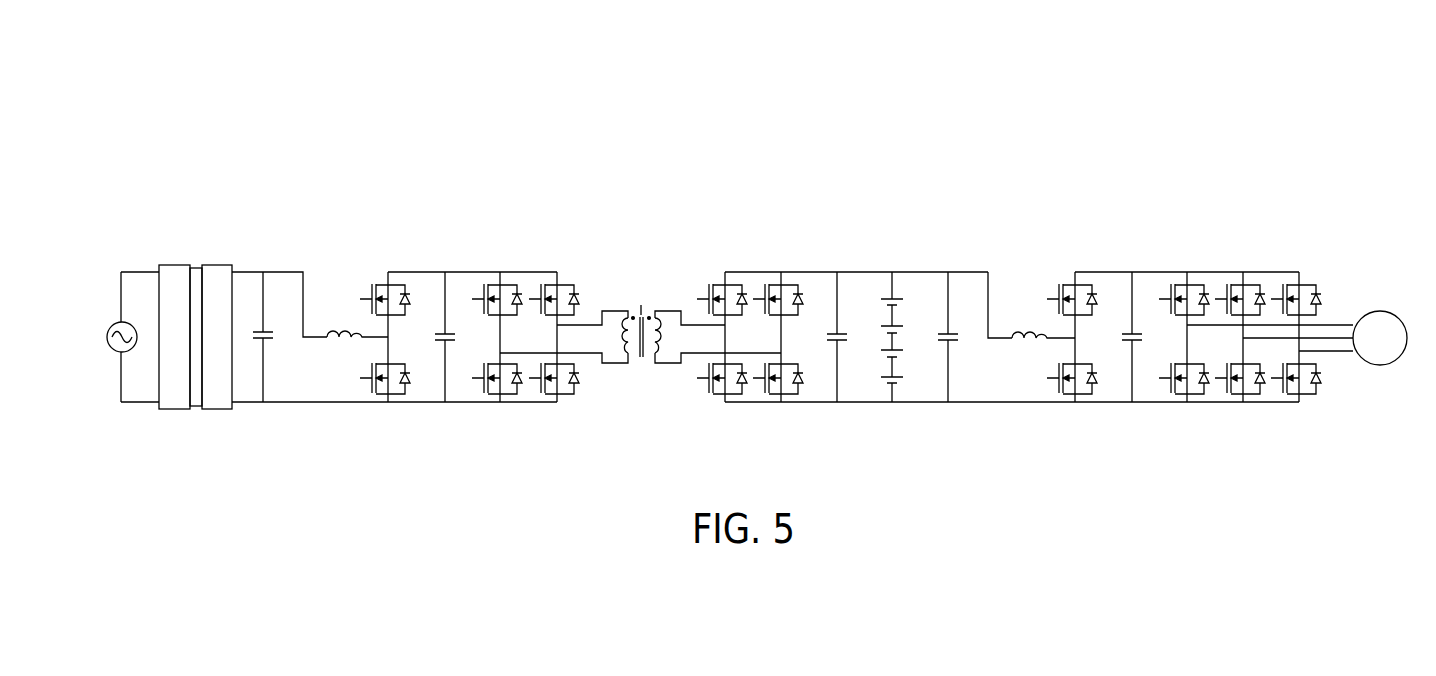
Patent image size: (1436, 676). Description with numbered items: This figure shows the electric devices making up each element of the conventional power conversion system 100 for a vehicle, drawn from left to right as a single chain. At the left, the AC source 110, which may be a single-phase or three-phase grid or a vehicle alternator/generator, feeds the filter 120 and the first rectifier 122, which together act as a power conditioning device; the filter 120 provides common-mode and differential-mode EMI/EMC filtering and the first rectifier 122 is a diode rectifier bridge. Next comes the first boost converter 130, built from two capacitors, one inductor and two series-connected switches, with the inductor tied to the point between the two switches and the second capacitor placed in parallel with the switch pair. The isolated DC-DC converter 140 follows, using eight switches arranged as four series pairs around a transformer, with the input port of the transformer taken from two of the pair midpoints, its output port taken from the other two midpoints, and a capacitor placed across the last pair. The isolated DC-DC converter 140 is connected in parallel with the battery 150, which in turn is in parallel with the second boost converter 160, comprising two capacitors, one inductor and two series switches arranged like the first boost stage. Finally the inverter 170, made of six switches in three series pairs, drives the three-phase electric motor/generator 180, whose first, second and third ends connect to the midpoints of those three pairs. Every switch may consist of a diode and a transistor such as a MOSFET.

The power conversion system 100 is at (279, 141).
The AC source 110 is at (98, 427).
The filter 120 is at (158, 427).
The first rectifier 122 is at (202, 427).
The first boost converter 130 is at (242, 427).
The isolated DC-DC converter 140 is at (462, 428).
The battery 150 is at (870, 428).
The second boost converter 160 is at (932, 428).
The inverter 170 is at (1150, 428).
The electric motor/generator 180 is at (1381, 311).